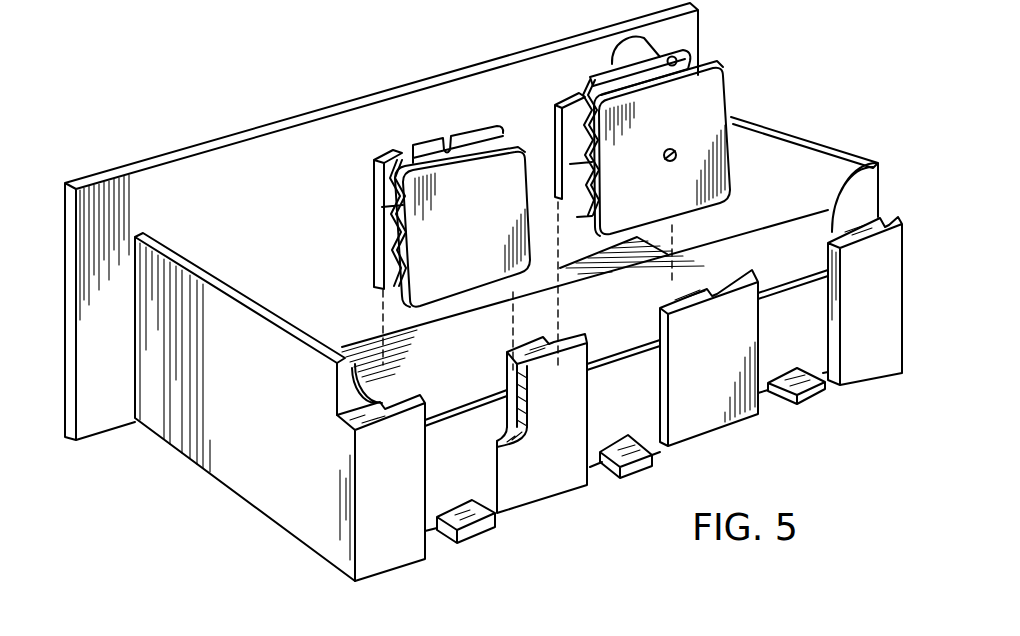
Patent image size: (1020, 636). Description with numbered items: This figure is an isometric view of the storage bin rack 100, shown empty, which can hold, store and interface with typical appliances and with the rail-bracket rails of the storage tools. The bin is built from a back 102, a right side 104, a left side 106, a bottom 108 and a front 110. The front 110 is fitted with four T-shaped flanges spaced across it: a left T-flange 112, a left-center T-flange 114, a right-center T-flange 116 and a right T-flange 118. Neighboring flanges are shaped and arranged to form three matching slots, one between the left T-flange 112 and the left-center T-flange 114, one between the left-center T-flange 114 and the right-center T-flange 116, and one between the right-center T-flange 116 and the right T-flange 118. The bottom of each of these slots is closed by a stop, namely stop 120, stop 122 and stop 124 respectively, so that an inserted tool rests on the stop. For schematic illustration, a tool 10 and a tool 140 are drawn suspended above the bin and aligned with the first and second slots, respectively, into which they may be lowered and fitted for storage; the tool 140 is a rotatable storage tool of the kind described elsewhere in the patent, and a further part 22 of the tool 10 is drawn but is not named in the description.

The storage bin rack 100 is at (200, 503).
The back 102 is at (197, 145).
The right side 104 is at (833, 147).
The left side 106 is at (230, 292).
The bottom 108 is at (485, 370).
The front 110 is at (625, 375).
The left T-flange 112 is at (387, 572).
The left-center T-flange 114 is at (543, 507).
The right-center T-flange 116 is at (713, 432).
The right T-flange 118 is at (870, 374).
The stop 120 is at (467, 543).
The stop 122 is at (638, 477).
The stop 124 is at (828, 388).
The spring clip 22 is at (390, 157).
The tool 10 is at (505, 145).
The tool 140 is at (733, 87).